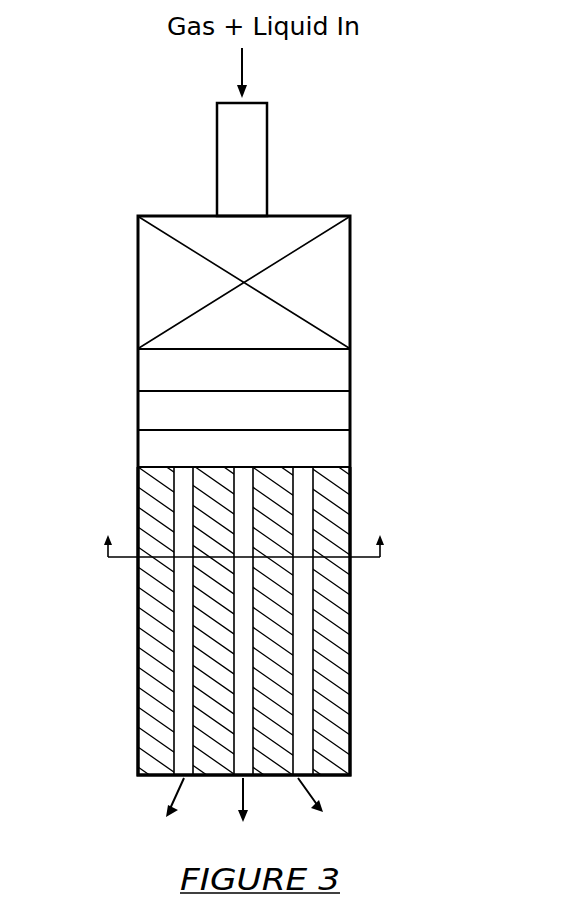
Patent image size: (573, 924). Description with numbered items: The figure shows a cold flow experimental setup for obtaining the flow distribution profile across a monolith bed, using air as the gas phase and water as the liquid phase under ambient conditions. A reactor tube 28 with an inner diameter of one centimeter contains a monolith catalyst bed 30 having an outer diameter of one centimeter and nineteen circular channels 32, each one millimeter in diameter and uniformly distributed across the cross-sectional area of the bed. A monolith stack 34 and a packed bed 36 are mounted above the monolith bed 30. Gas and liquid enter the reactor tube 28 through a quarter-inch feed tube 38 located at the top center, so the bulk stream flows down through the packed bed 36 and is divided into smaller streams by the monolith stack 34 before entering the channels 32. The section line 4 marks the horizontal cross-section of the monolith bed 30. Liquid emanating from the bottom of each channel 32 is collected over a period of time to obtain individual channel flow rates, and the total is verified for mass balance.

The feed tube 38 is at (268, 160).
The reactor tube 28 is at (137, 287).
The packed bed 36 is at (327, 285).
The monolith stack 34 is at (132, 349).
The circular channels 32 is at (183, 645).
The monolith catalyst bed 30 is at (343, 645).
The section line 4- 4 is at (244, 533).